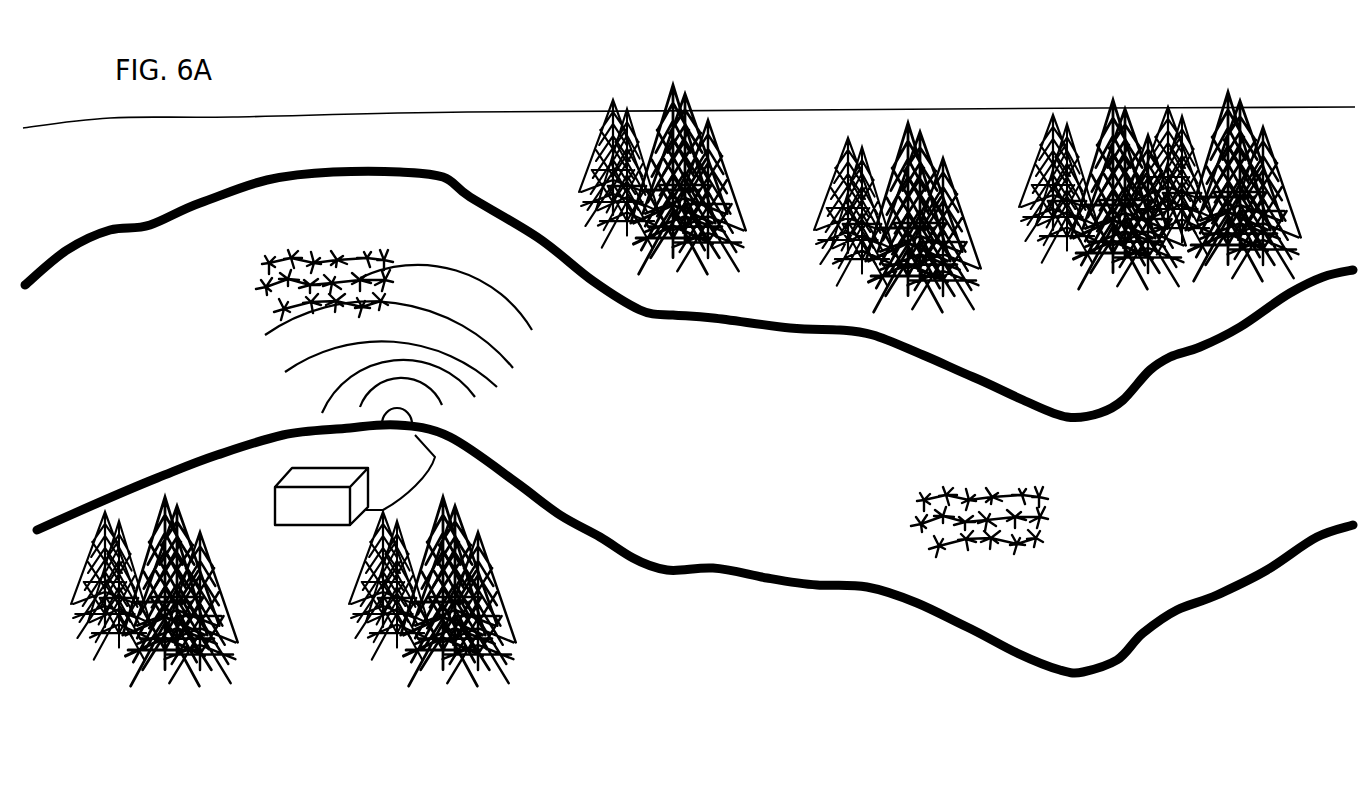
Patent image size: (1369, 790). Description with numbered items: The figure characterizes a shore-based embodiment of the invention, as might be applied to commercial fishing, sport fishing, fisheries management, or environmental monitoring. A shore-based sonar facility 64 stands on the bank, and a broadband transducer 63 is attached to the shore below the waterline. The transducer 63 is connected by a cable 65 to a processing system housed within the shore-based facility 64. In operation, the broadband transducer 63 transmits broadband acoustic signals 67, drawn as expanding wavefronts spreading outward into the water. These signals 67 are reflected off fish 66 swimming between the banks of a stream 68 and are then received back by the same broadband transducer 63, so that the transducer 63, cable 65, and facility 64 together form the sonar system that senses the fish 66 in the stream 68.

The broadband transducer 63 is at (413, 413).
The shore-based sonar facility 64 is at (288, 468).
The cable 65 is at (435, 457).
The fish 66 is at (322, 263).
The broadband acoustic signals 67 is at (513, 367).
The stream 68 is at (712, 320).